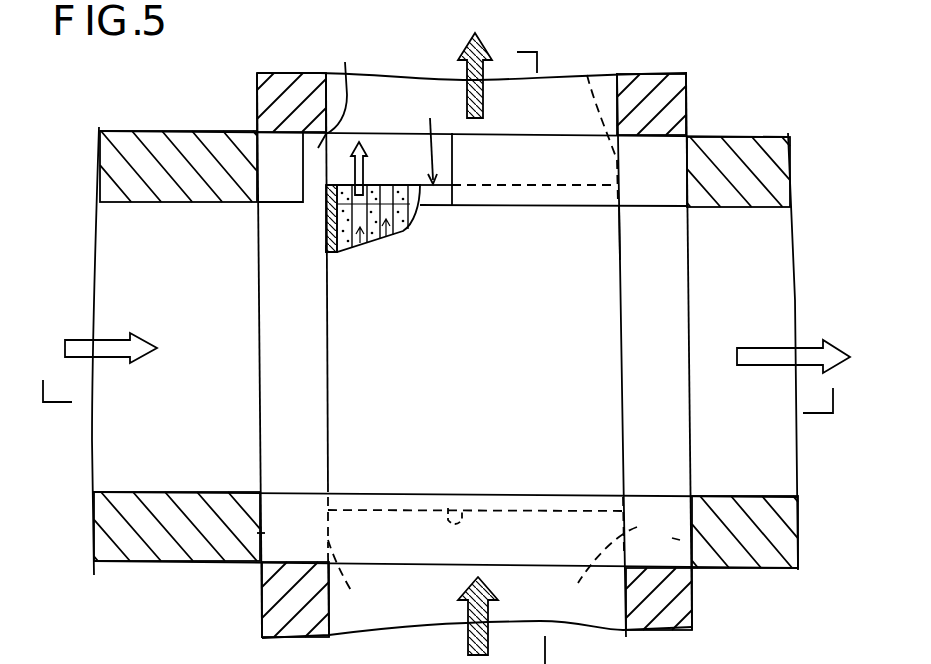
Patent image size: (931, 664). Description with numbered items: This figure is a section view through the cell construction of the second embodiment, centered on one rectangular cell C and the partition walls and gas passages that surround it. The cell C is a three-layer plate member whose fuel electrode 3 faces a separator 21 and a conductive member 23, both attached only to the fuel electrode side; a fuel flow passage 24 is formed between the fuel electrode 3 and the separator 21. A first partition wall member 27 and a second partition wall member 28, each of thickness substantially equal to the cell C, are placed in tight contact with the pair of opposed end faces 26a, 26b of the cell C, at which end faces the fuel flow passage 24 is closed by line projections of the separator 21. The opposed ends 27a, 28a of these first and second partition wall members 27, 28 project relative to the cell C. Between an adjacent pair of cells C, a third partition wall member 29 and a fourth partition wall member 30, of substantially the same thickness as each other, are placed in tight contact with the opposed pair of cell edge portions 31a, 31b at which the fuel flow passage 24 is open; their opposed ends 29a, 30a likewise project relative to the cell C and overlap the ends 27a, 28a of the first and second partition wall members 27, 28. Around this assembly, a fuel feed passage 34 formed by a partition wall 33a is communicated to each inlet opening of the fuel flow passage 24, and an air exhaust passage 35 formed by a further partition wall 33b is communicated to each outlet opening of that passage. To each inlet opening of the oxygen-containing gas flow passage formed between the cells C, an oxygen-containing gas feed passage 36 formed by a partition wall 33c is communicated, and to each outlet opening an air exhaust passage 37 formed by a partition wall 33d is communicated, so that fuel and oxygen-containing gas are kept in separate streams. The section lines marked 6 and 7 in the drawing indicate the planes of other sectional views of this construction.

The fuel electrode 3 is at (386, 193).
The separator 21 is at (347, 298).
The conductive member 23 is at (343, 222).
The fuel flow passage 24 is at (390, 238).
The end face of the cell 26a is at (327, 247).
The end face of the cell 26b is at (619, 245).
The first partition wall member 27 is at (268, 422).
The end of first partition wall member 27a is at (354, 328).
The second partition wall member 28 is at (680, 451).
The end of second partition wall member 28a is at (597, 328).
The third partition wall member 29 is at (545, 492).
The end of third partition wall member 29a is at (265, 533).
The fourth partition wall member 30 is at (560, 207).
The end of fourth partition wall member 30a is at (270, 146).
The cell edge portion 31a is at (448, 508).
The cell edge portion 31b is at (450, 192).
The partition wall 33a is at (262, 613).
The partition wall 33b is at (258, 92).
The partition wall 33c is at (118, 137).
The partition wall 33d is at (768, 146).
The fuel feed passage 34 is at (448, 615).
The air exhaust passage 35 is at (504, 81).
The oxygen-containing gas feed passage 36 is at (143, 326).
The air exhaust passage 37 is at (781, 333).
The cell C is at (426, 134).
The section line VI-VI 6 is at (518, 345).
The section line VII-VII 7 is at (445, 386).